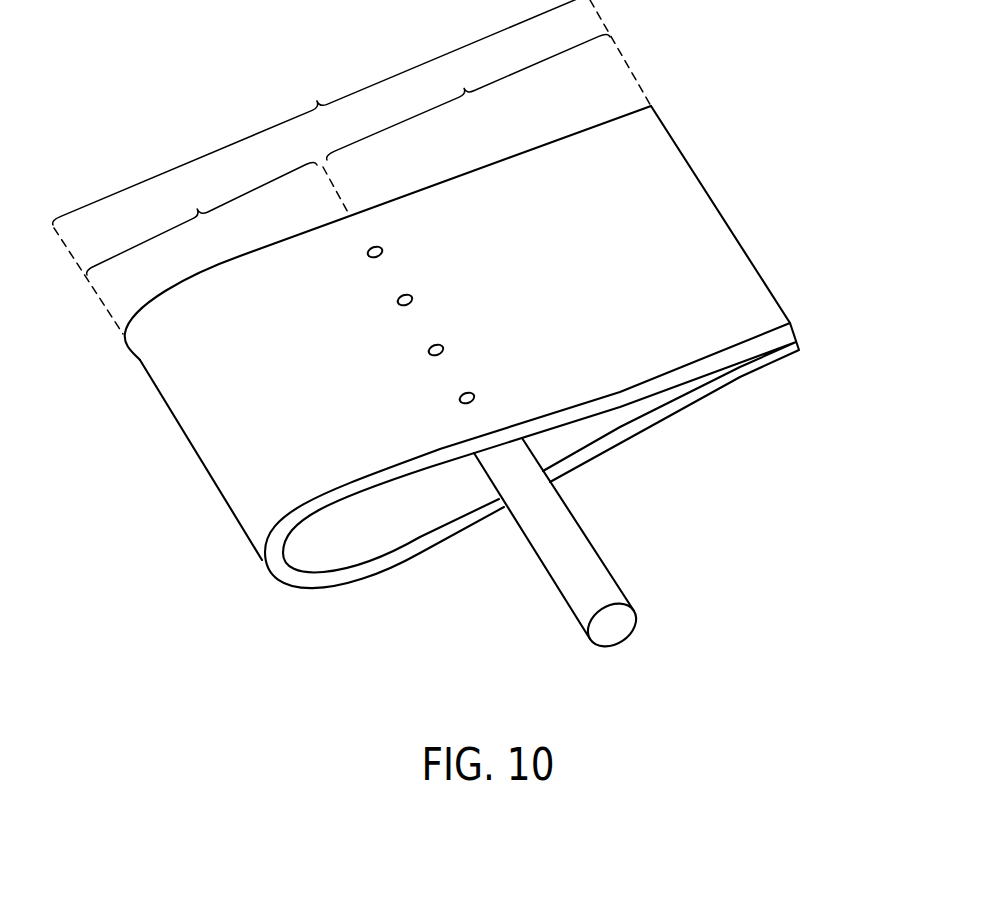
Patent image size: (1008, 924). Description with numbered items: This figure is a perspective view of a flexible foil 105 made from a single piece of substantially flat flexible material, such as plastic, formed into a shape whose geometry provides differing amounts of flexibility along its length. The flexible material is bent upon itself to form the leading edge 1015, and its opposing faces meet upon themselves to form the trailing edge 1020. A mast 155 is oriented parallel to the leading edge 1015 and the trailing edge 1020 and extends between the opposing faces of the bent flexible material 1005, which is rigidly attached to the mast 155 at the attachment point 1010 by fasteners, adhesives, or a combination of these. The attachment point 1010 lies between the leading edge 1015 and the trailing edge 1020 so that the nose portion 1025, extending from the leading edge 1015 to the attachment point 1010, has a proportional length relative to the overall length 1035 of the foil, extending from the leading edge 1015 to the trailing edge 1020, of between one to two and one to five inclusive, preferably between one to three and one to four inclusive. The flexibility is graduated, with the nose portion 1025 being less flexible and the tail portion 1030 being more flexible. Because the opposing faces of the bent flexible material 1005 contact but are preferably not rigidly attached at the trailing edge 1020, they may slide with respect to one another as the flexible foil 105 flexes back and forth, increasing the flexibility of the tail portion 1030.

The flexible foil 105 is at (617, 305).
The mast 155 is at (605, 566).
The bent flexible material 1005 is at (670, 415).
The attachment point 1010 is at (411, 268).
The leading edge 1015 is at (200, 465).
The trailing edge 1020 is at (730, 220).
The nose portion 1025 is at (218, 219).
The tail portion 1030 is at (468, 97).
The overall length 1035 is at (352, 167).